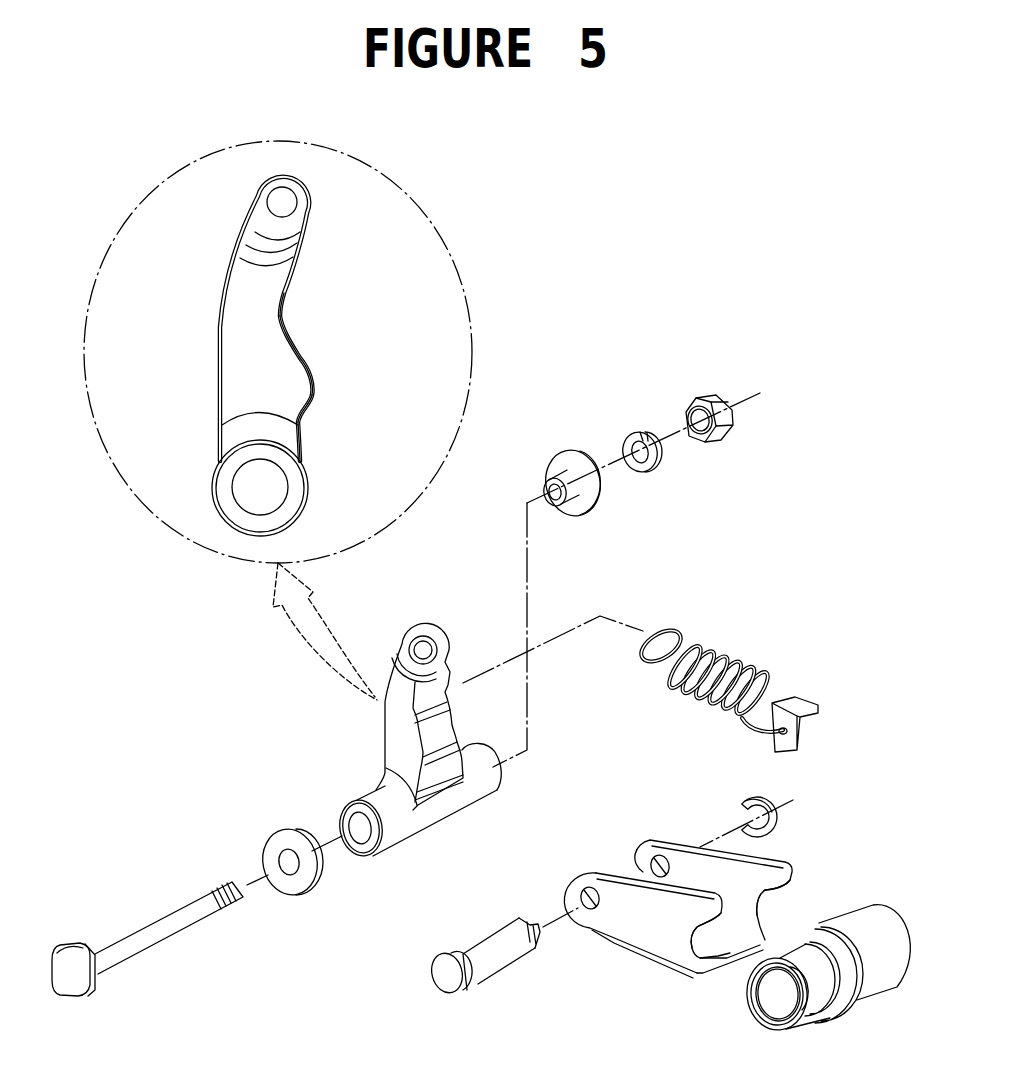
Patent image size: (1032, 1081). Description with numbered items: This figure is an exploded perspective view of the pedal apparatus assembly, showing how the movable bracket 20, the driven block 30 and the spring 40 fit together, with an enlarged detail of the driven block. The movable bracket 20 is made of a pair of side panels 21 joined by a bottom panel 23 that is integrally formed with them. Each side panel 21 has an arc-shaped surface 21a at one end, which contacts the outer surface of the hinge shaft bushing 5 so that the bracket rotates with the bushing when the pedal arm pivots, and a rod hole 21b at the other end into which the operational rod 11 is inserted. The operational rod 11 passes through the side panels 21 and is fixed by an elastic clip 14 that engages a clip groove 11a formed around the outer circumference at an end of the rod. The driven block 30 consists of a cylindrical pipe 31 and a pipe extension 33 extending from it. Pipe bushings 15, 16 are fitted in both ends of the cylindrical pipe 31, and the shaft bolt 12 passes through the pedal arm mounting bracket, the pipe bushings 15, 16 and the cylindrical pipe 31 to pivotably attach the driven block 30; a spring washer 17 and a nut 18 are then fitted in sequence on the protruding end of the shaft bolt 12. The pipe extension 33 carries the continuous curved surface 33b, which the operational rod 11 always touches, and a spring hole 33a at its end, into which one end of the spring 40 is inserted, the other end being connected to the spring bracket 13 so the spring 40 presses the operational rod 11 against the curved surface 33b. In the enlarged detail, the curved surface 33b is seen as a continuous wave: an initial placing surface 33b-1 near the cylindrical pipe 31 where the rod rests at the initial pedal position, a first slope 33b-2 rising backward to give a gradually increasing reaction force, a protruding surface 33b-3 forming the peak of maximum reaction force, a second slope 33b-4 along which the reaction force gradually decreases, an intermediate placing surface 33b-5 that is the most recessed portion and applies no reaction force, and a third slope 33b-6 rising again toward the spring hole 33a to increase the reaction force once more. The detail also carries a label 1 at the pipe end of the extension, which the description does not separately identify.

The pivot boss hole 1 is at (214, 490).
The hinge shaft bushing 5 is at (873, 977).
The operational rod 11 is at (493, 957).
The clip groove 11a is at (532, 920).
The shaft bolt 12 is at (172, 927).
The spring bracket 13 is at (800, 702).
The elastic clip 14 is at (752, 797).
The pipe bushing 15 is at (272, 843).
The pipe bushing 16 is at (563, 450).
The spring washer 17 is at (633, 423).
The nut 18 is at (702, 393).
The movable bracket 20 is at (667, 970).
The side panel 21 is at (770, 848).
The arc-shaped surface 21a is at (775, 900).
The rod hole 21b is at (640, 850).
The bottom panel 23 is at (725, 938).
The driven block 30 is at (213, 350).
The cylindrical pipe 31 is at (455, 803).
The pipe extension 33 is at (235, 288).
The spring hole 33a is at (277, 200).
The curved surface 33b is at (412, 245).
The initial placing surface 33b-1 is at (300, 422).
The first slope 33b-2 is at (310, 404).
The protruding surface 33b-3 is at (314, 390).
The second slope 33b-4 is at (300, 357).
The intermediate placing surface 33b-5 is at (283, 313).
The third slope 33b-6 is at (300, 235).
The spring 40 is at (728, 662).